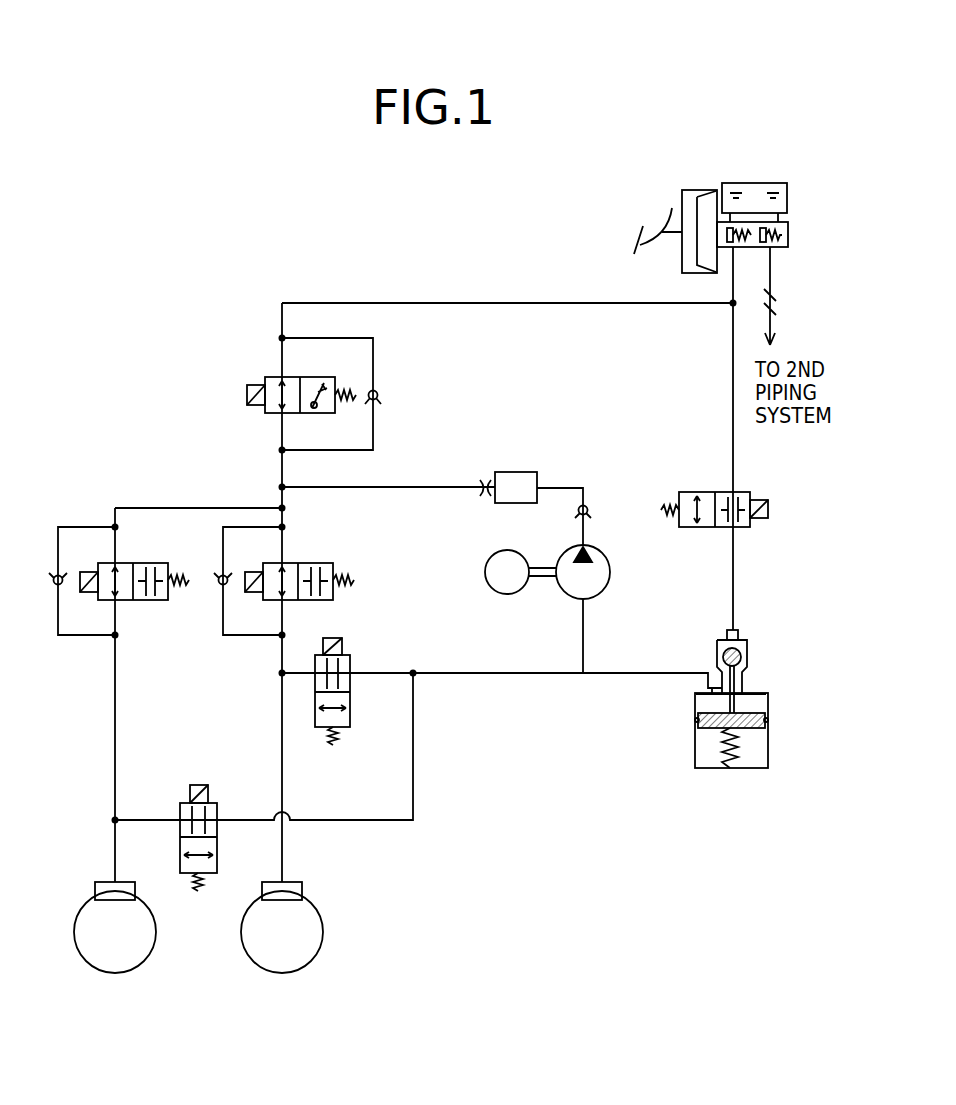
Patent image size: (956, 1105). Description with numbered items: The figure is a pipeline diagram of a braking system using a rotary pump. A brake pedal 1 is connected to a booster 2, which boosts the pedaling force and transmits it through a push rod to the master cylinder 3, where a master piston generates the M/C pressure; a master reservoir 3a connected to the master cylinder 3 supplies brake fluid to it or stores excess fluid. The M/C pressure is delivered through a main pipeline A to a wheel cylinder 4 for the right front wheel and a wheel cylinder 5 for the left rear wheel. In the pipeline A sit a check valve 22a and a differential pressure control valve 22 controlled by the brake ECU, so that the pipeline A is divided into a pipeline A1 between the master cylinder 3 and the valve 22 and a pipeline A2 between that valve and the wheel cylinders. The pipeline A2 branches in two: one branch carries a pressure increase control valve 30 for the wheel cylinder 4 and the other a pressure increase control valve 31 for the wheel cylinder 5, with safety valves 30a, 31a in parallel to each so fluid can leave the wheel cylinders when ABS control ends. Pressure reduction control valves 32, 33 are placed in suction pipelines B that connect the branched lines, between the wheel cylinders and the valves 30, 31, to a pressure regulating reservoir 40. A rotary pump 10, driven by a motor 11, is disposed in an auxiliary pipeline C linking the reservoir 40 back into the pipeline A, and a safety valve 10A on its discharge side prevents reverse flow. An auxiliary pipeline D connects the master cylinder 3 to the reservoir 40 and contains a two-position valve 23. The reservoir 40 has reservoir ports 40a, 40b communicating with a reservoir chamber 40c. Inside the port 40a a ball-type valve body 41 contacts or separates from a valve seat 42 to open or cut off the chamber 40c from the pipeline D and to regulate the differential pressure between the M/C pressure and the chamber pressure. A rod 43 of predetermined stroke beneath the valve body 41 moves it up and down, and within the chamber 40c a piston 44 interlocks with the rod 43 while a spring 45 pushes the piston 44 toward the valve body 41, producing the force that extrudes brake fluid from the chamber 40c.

The brake pedal 1 is at (640, 238).
The booster 2 is at (682, 200).
The master cylinder 3 is at (788, 240).
The master reservoir 3a is at (787, 197).
The wheel cylinder 4 is at (93, 887).
The wheel cylinder 5 is at (262, 887).
The rotary pump 10 is at (611, 572).
The safety valve 10A is at (592, 512).
The motor 11 is at (507, 596).
The differential pressure control valve 22 is at (273, 414).
The check valve 22a is at (382, 394).
The two-position valve 23 is at (710, 492).
The pressure increase control valve 30 is at (147, 601).
The safety valve 30a is at (49, 586).
The pressure increase control valve 31 is at (303, 564).
The safety valve 31a is at (215, 578).
The pressure reduction control valve 32 is at (180, 858).
The pressure reduction control valve 33 is at (352, 717).
The pressure regulating reservoir 40 is at (724, 686).
The reservoir port 40a is at (735, 632).
The reservoir port 40b is at (703, 688).
The reservoir chamber 40c is at (698, 708).
The valve body 41 is at (740, 652).
The valve seat 42 is at (747, 668).
The rod 43 is at (742, 688).
The piston 44 is at (748, 730).
The spring 45 is at (745, 758).
The pipeline A is at (601, 313).
The pipeline A1 is at (366, 303).
The pipeline A2 is at (282, 470).
The pipeline B is at (497, 674).
The pipeline C is at (583, 631).
The pipeline D is at (733, 373).